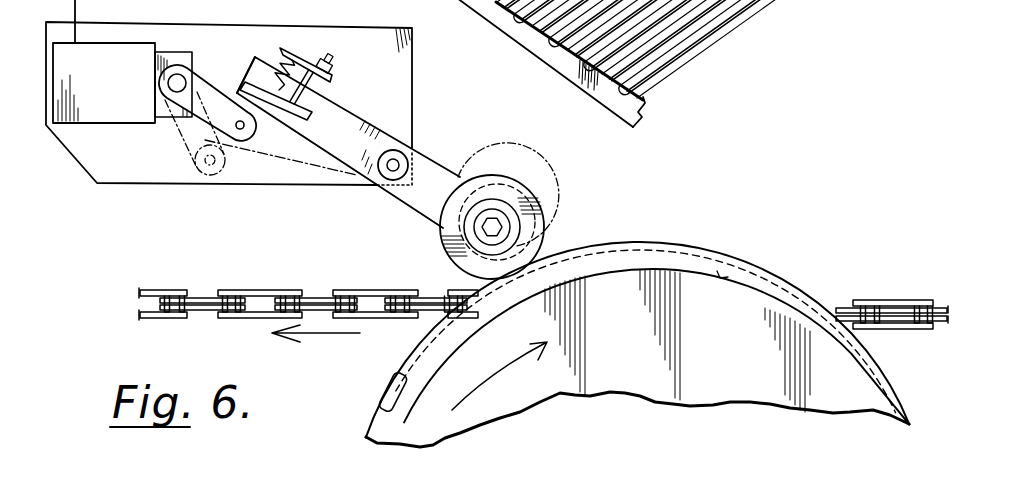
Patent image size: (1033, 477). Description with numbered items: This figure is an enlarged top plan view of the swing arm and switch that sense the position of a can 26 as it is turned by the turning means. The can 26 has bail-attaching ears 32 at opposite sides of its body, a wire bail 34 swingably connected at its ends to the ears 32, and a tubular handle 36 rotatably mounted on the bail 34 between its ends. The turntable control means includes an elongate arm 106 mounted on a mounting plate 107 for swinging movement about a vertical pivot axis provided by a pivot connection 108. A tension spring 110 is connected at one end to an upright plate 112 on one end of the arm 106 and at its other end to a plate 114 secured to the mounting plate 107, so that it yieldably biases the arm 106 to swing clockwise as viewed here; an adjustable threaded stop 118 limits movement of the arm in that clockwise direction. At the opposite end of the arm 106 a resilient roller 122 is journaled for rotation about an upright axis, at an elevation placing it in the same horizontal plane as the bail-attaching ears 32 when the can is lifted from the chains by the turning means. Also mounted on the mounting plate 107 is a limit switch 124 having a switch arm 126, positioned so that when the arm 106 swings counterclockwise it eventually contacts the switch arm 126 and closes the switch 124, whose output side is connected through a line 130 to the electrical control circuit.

The can 26 is at (383, 426).
The bail-attaching ears 32 is at (385, 388).
The wire bail 34 is at (560, 254).
The tubular handle 36 is at (748, 262).
The elongate arm 106 is at (423, 206).
The plate 107 is at (158, 178).
The pivot connection 108 is at (386, 184).
The tension spring 110 is at (253, 62).
The upright plate 112 is at (307, 118).
The plate 114 is at (337, 76).
The adjustable threaded stop 118 is at (330, 88).
The resilient roller 122 is at (452, 257).
The limit switch 124 is at (80, 113).
The switch arm 126 is at (207, 143).
The line 130 is at (77, 18).